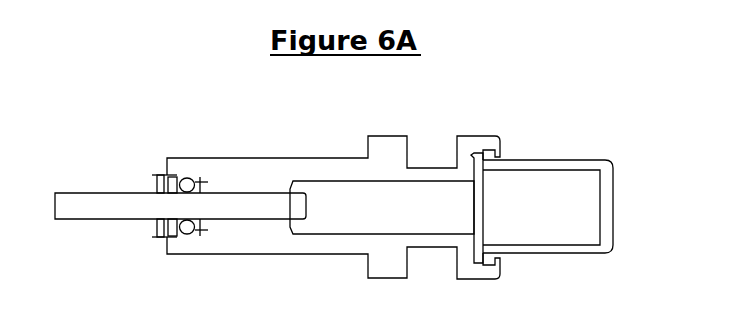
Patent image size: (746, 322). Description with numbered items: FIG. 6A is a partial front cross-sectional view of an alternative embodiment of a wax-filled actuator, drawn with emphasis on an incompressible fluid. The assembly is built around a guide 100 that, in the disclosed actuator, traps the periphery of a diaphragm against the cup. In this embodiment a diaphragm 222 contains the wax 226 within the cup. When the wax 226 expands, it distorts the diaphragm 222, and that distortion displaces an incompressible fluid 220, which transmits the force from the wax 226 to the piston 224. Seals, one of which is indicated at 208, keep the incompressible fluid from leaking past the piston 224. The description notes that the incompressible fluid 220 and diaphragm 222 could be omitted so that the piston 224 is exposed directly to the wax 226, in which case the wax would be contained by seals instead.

The guide 100 is at (143, 123).
The seal 208 is at (190, 183).
The piston 224 is at (225, 207).
The incompressible fluid 220 is at (380, 207).
The diaphragm 222 is at (483, 200).
The wax 226 is at (548, 195).